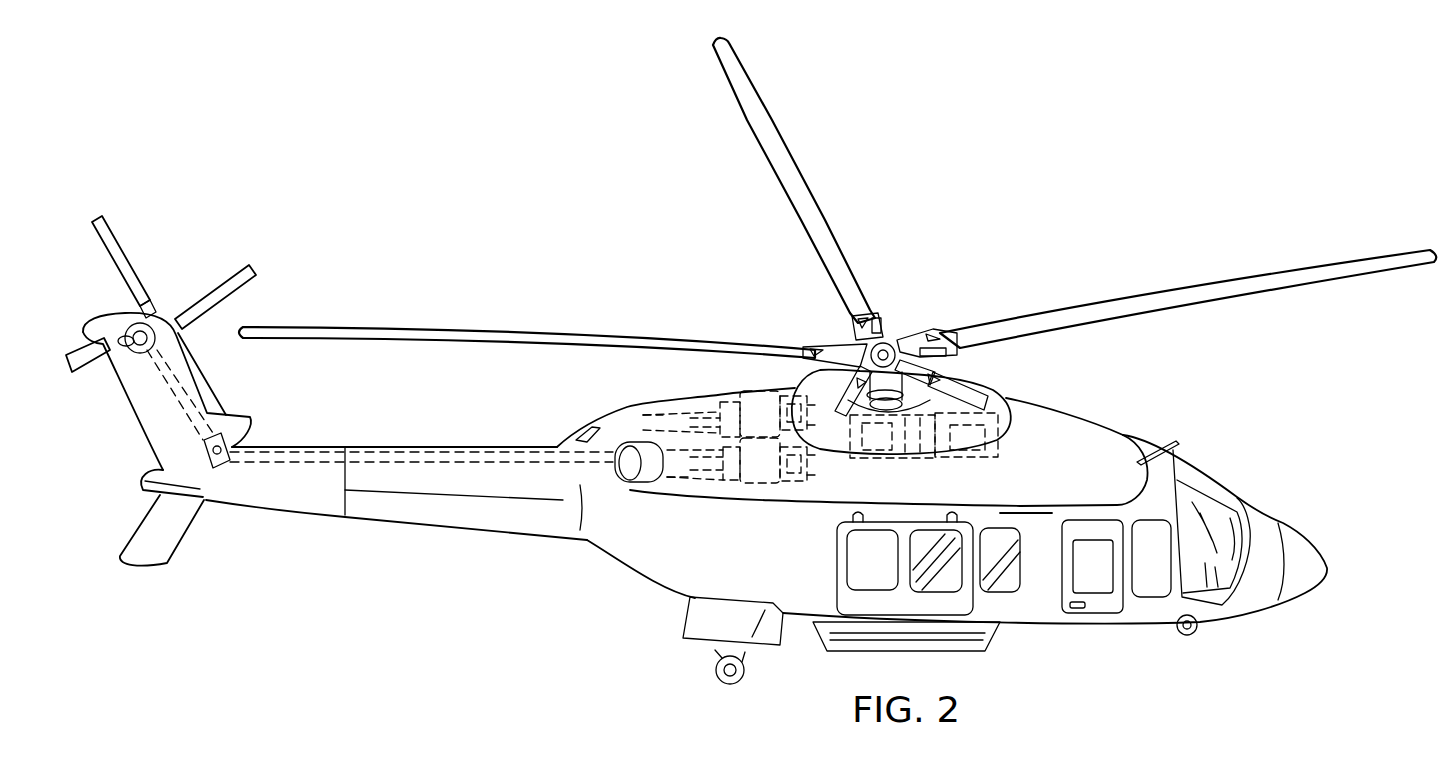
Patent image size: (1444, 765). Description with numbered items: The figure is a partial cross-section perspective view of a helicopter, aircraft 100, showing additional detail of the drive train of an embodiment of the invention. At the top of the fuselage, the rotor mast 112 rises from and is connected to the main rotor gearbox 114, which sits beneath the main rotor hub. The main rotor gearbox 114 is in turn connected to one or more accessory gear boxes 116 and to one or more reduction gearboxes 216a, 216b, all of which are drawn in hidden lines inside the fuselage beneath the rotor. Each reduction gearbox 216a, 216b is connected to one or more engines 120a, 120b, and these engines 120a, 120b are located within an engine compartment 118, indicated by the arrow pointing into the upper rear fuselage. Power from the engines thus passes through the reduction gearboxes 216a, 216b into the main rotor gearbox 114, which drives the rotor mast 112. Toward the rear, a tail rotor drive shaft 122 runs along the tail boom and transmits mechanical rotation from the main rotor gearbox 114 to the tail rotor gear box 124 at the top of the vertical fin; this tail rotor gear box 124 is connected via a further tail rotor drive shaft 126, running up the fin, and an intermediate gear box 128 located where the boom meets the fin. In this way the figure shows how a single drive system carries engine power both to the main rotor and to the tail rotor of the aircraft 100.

The aircraft 100 is at (1121, 85).
The rotor mast 112 is at (852, 455).
The main rotor gearbox 114 is at (890, 450).
The accessory gear box 116 is at (980, 448).
The engine compartment 118 is at (770, 382).
The engine 120a is at (735, 475).
The engine 120b is at (742, 393).
The tail rotor drive shaft 122 is at (432, 446).
The tail rotor gear box 124 is at (128, 316).
The tail rotor drive shaft 126 is at (203, 386).
The intermediate gear box 128 is at (215, 470).
The reduction gearbox 216a is at (795, 482).
The reduction gearbox 216b is at (818, 400).